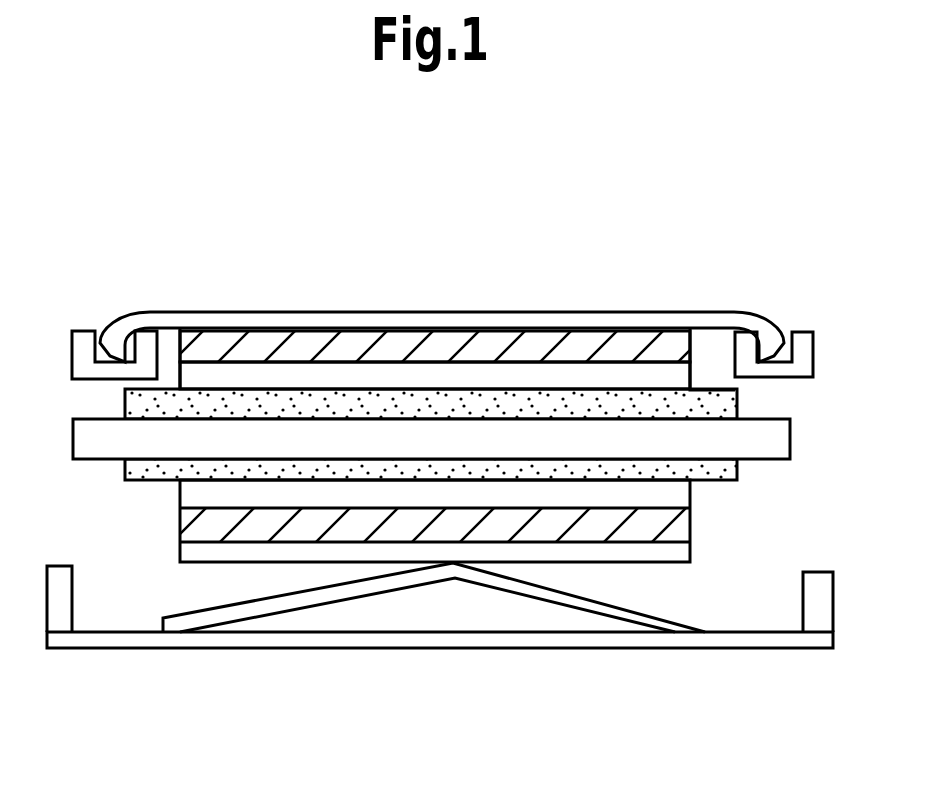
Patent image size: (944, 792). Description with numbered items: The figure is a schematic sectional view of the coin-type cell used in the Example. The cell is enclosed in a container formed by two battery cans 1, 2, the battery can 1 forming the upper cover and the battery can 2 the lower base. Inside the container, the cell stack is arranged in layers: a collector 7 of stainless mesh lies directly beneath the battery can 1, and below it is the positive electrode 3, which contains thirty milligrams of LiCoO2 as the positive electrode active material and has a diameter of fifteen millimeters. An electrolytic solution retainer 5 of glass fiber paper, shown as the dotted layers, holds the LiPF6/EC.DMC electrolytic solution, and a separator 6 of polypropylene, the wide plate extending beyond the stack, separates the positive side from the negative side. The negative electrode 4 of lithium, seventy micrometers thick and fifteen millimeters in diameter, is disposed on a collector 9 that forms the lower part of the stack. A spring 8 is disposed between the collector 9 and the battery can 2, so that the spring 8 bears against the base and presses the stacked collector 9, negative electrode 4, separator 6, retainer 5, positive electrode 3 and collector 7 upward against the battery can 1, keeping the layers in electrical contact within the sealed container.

The battery can 1 is at (160, 312).
The battery can 2 is at (72, 640).
The positive electrode 3 is at (682, 382).
The negative electrode 4 is at (675, 493).
The electrolytic solution retainer 5 is at (732, 470).
The separator 6 is at (782, 442).
The collector 7 is at (445, 338).
The spring 8 is at (278, 607).
The collector 9 is at (700, 512).